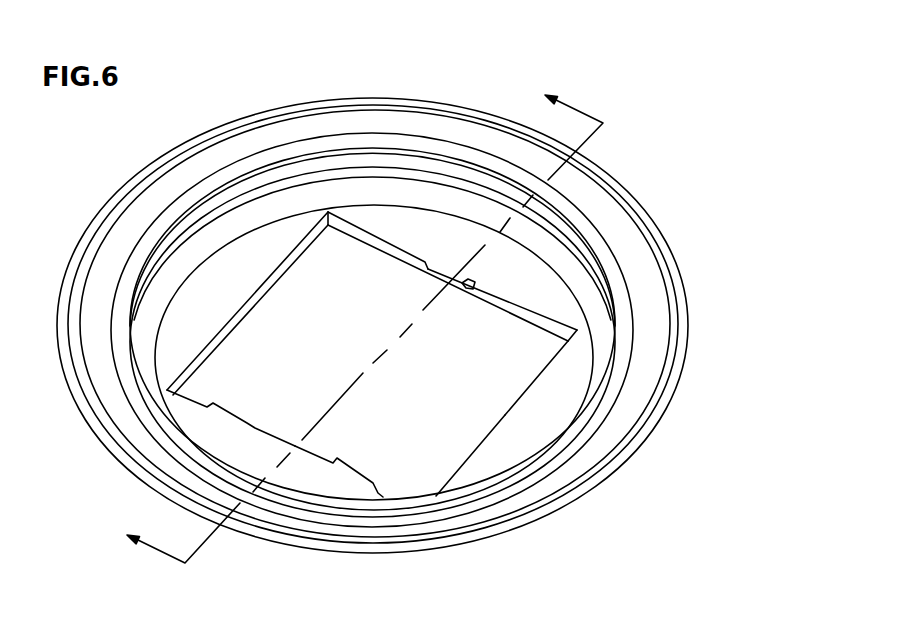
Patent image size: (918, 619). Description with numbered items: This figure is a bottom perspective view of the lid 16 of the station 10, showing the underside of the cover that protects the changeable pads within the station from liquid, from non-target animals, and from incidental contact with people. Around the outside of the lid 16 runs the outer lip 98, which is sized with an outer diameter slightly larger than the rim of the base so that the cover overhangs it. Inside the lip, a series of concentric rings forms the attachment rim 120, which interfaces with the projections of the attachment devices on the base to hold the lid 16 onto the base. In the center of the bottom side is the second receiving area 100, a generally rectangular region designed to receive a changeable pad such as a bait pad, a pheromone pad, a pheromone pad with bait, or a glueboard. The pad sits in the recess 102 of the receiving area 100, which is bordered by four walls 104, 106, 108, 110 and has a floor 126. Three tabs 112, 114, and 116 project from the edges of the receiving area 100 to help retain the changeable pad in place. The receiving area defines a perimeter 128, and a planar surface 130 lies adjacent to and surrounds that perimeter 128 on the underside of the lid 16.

The station 10 is at (349, 316).
The lid 16 is at (445, 80).
The outer lip 98 is at (622, 477).
The second receiving area 100 is at (417, 257).
The recess 102 is at (494, 297).
The wall 104 is at (390, 245).
The wall 106 is at (263, 293).
The wall 108 is at (320, 463).
The wall 110 is at (505, 422).
The tab 112 is at (467, 292).
The tab 114 is at (235, 417).
The tab 116 is at (358, 475).
The attachment rim 120 is at (588, 247).
The floor 126 is at (503, 377).
The perimeter 128 is at (523, 306).
The planar surface 130 is at (238, 296).